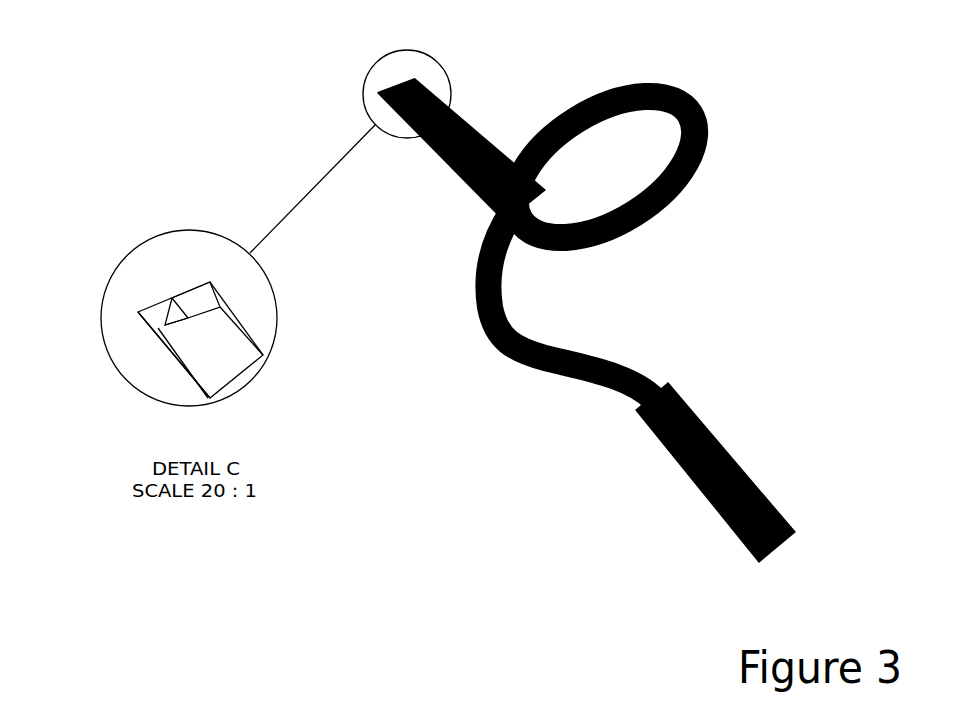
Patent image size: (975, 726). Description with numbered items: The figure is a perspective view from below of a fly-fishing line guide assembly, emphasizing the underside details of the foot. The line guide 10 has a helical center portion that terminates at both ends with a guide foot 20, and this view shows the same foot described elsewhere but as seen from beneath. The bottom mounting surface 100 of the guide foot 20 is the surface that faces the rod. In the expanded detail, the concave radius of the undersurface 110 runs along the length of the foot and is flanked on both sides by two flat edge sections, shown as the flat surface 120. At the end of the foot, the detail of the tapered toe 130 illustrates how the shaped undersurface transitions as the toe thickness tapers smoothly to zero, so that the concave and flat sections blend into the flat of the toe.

The line guide 10 is at (702, 165).
The guide foot 20 is at (490, 153).
The mounting surface 100 is at (384, 192).
The concave section of undersurface 110 is at (289, 369).
The flat sections of undersurface 120 is at (243, 333).
The undersurface of tapered toe 130 is at (119, 359).